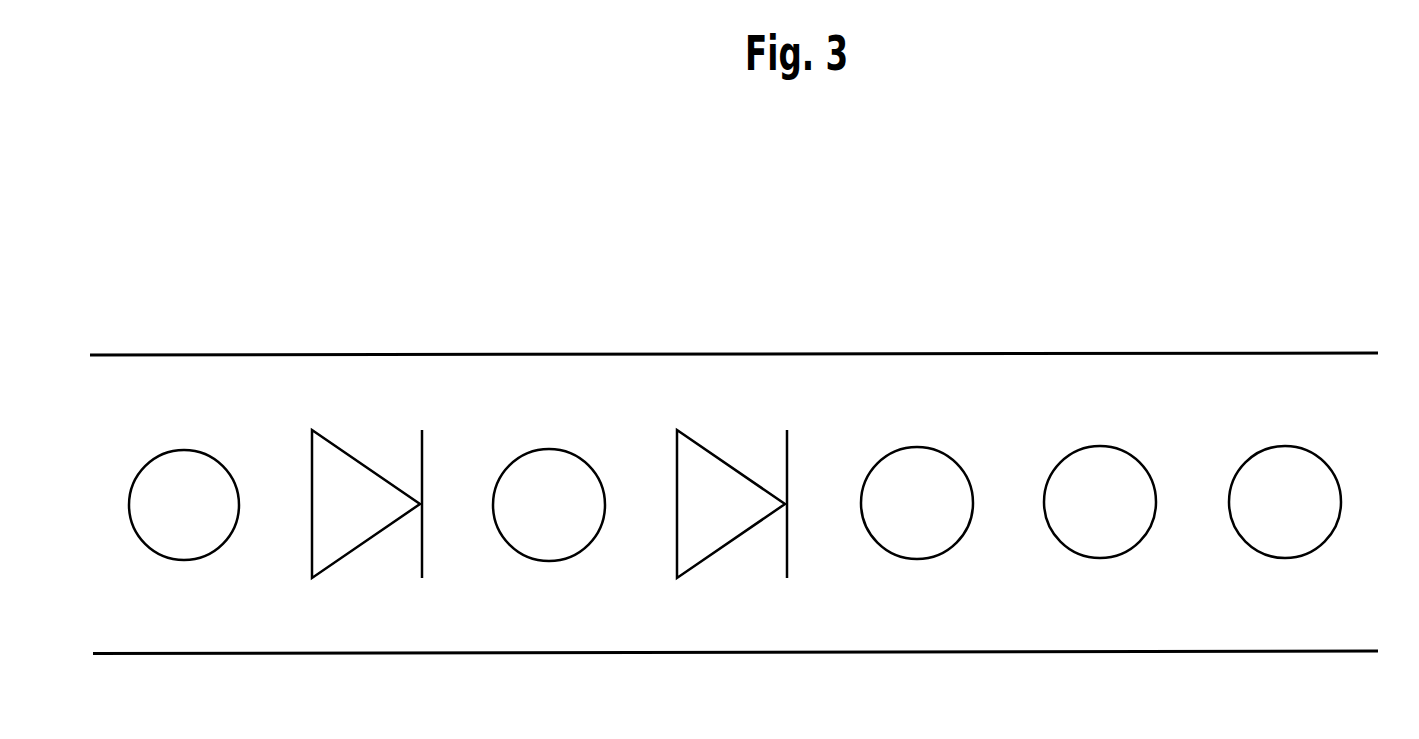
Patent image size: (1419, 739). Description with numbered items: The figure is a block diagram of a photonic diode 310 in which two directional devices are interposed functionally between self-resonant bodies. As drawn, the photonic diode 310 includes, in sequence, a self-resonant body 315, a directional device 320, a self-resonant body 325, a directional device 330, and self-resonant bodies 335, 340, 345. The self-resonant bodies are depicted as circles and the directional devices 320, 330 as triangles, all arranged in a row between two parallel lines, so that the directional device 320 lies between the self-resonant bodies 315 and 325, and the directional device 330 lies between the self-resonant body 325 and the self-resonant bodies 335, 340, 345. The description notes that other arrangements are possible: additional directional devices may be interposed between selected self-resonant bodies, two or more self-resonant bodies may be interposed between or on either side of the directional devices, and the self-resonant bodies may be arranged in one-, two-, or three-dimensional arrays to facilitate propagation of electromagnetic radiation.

The photonic diode 310 is at (642, 354).
The self-resonant body 315 is at (185, 445).
The directional device 320 is at (312, 430).
The self-resonant body 325 is at (550, 445).
The directional device 330 is at (677, 430).
The self-resonant body 335 is at (917, 447).
The self-resonant body 340 is at (1102, 445).
The self-resonant body 345 is at (1285, 445).